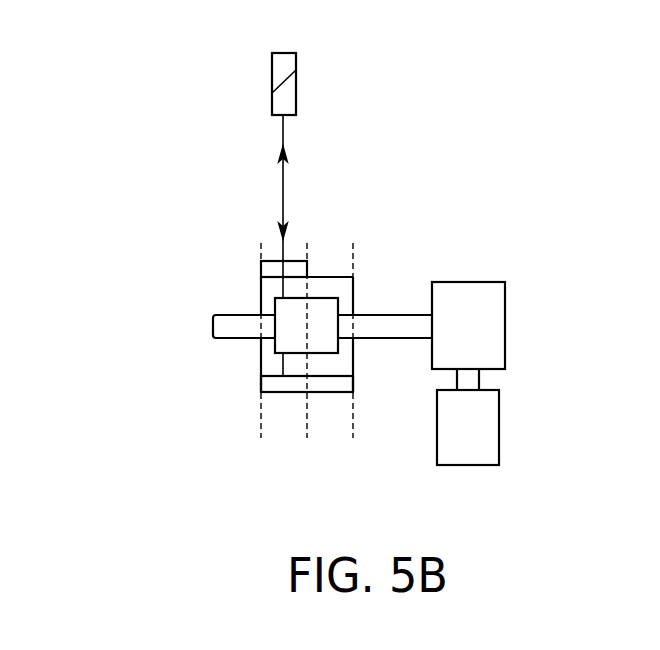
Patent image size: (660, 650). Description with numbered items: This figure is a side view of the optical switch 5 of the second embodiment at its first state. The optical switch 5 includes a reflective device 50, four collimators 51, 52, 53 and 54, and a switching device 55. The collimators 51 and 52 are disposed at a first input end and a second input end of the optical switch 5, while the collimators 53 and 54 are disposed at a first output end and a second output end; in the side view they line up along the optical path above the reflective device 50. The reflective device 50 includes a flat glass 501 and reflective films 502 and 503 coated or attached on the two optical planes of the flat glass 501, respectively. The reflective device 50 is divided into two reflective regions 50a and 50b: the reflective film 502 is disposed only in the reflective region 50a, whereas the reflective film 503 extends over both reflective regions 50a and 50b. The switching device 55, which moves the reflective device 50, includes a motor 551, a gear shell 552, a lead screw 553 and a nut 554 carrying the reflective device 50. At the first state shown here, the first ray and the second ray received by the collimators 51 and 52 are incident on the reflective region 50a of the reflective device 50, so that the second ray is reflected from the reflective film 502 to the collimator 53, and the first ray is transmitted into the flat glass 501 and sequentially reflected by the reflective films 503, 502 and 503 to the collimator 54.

The optical switch 5 is at (480, 137).
The reflective device 50 is at (118, 248).
The flat glass 501 is at (268, 292).
The reflective film 502 is at (268, 265).
The reflective film 503 is at (263, 383).
The reflective region 50a is at (284, 426).
The reflective region 50b is at (330, 426).
The collimator 51 is at (284, 84).
The collimator 52 is at (284, 84).
The collimator 53 is at (284, 84).
The collimator 54 is at (297, 81).
The switching device 55 is at (593, 228).
The motor 551 is at (497, 417).
The gear shell 552 is at (497, 325).
The lead screw 553 is at (388, 319).
The nut 554 is at (325, 305).